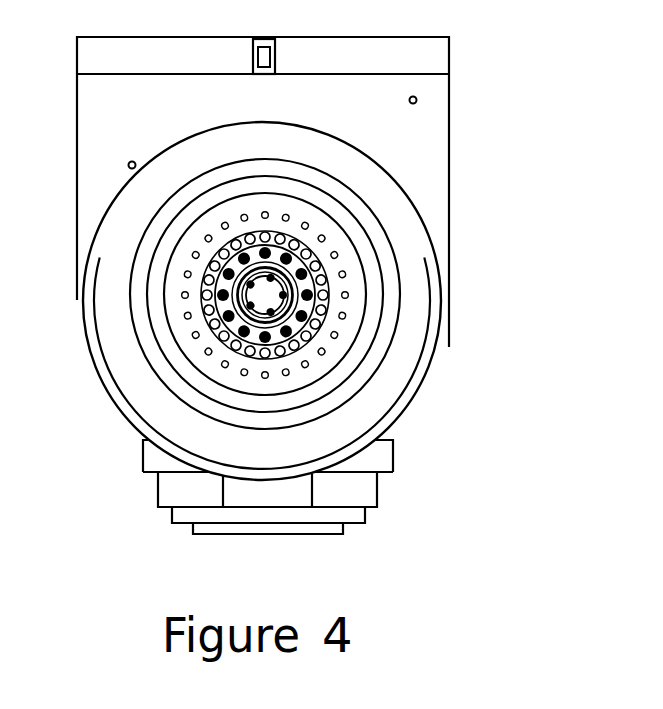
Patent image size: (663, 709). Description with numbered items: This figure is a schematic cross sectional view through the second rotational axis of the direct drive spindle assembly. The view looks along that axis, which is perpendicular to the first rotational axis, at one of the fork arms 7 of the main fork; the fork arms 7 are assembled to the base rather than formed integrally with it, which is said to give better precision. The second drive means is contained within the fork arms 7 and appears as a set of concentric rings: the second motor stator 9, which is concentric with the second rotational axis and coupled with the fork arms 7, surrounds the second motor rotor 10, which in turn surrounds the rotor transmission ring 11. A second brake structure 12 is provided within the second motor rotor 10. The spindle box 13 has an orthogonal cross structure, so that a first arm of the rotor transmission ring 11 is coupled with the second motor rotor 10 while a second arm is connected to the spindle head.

The fork arms 7 is at (427, 139).
The second motor stator 9 is at (393, 202).
The second motor rotor 10 is at (385, 249).
The rotor transmission ring 11 is at (375, 287).
The second brake structure 12 is at (357, 325).
The spindle box 13 is at (280, 338).